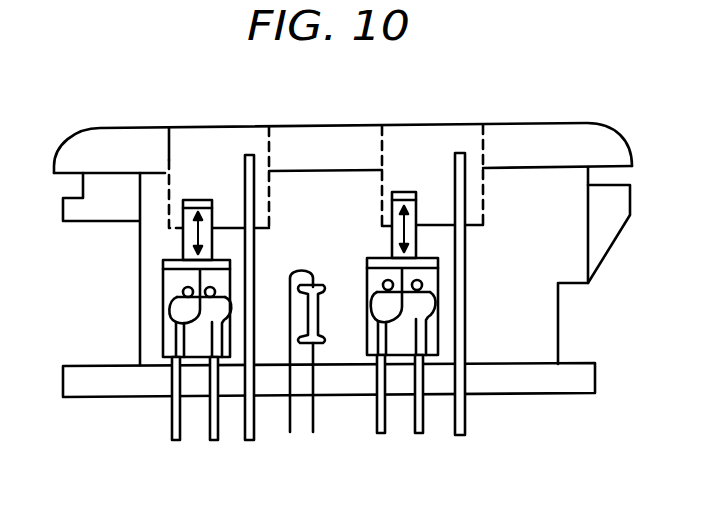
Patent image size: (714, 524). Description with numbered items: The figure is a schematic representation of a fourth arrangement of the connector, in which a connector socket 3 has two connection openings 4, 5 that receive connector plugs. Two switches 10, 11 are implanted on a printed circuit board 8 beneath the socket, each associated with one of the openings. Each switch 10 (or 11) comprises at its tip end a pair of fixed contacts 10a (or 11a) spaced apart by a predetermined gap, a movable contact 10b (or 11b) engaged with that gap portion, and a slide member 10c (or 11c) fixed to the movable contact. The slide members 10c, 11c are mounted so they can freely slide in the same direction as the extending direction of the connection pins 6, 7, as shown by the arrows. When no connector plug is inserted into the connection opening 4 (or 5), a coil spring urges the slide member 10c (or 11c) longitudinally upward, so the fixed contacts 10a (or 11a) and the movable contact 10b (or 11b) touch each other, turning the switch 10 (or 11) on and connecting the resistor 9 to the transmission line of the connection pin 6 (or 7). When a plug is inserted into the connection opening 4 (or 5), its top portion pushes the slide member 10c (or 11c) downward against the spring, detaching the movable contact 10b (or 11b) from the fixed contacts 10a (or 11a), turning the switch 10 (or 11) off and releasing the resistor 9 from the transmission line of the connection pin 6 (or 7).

The connector socket 3 is at (616, 123).
The connection opening 4 is at (484, 155).
The connection opening 5 is at (168, 157).
The connection pin 6 is at (462, 437).
The connection pin 7 is at (250, 443).
The printed circuit board 8 is at (551, 385).
The resistor 9 is at (321, 316).
The switch 10 is at (373, 239).
The fixed contacts 10a is at (416, 435).
The movable contact 10b is at (372, 318).
The slide member 10c is at (418, 243).
The switch 11 is at (176, 249).
The fixed contacts 11a is at (212, 441).
The movable contact 11b is at (170, 317).
The slide member 11c is at (218, 232).